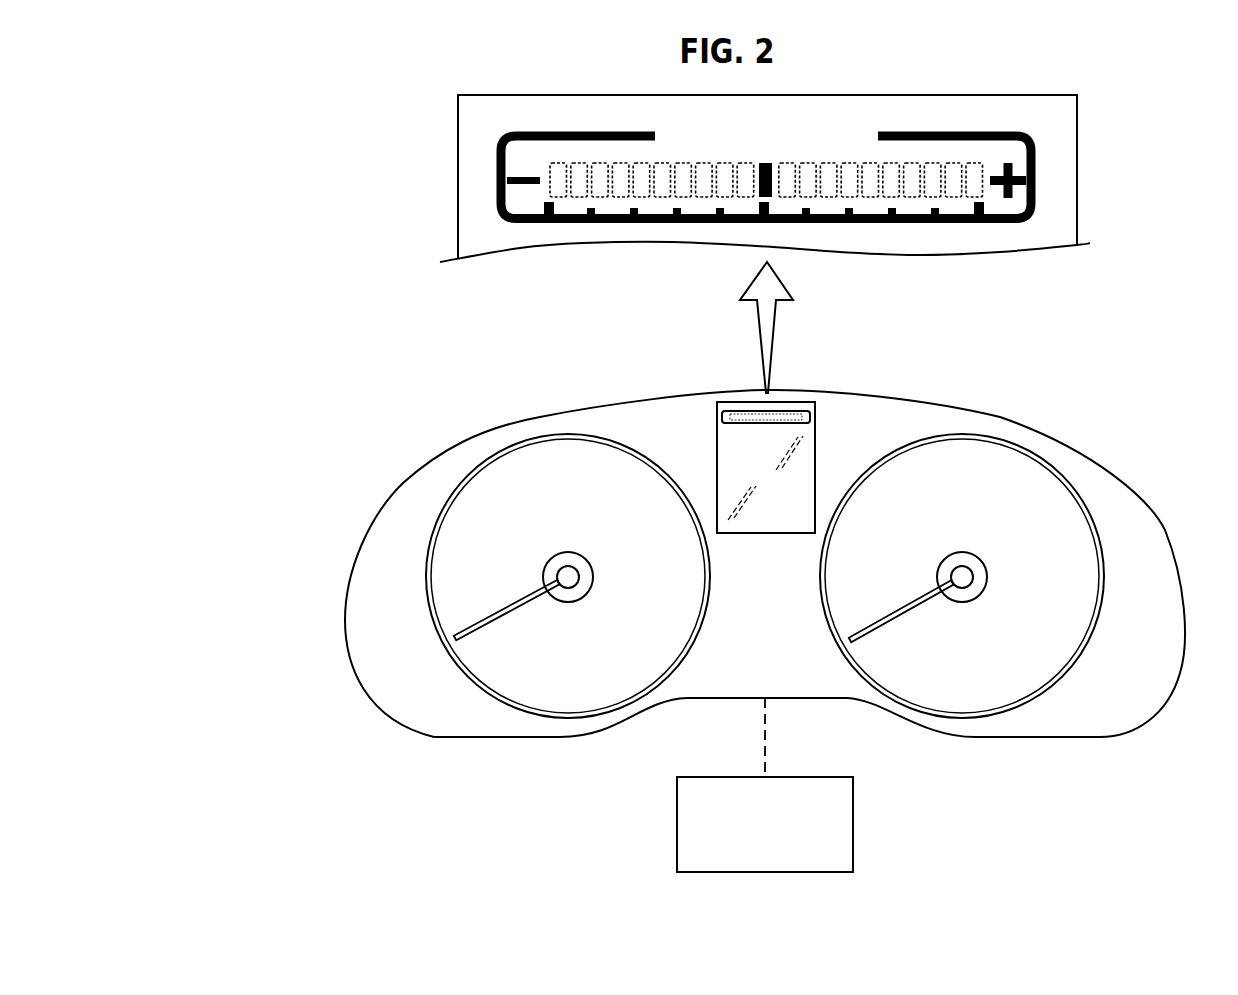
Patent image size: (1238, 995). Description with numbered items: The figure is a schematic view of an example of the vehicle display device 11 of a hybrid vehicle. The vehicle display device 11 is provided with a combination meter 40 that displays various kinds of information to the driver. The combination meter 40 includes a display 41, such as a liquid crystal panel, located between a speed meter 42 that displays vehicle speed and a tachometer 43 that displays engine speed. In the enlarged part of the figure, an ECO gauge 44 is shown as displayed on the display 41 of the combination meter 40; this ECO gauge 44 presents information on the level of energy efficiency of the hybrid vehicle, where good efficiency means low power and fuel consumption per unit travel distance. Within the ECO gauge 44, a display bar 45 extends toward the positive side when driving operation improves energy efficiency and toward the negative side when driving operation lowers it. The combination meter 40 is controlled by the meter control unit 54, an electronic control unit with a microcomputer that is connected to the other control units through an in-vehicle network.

The vehicle display device 11 is at (297, 428).
The combination meter 40 is at (1120, 465).
The display 41 is at (767, 522).
The speed meter 42 is at (976, 456).
The tachometer 43 is at (555, 457).
The ECO gauge 44 is at (1052, 144).
The display bar 45 is at (660, 160).
The meter control unit 54 is at (677, 800).